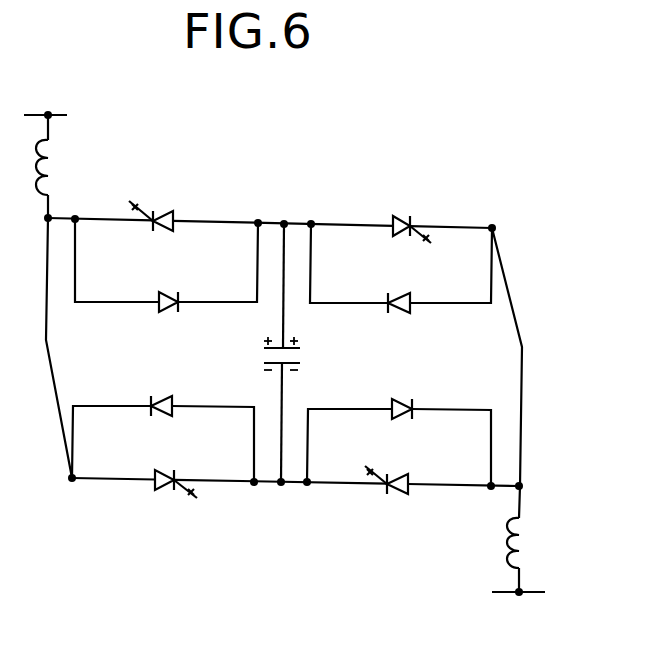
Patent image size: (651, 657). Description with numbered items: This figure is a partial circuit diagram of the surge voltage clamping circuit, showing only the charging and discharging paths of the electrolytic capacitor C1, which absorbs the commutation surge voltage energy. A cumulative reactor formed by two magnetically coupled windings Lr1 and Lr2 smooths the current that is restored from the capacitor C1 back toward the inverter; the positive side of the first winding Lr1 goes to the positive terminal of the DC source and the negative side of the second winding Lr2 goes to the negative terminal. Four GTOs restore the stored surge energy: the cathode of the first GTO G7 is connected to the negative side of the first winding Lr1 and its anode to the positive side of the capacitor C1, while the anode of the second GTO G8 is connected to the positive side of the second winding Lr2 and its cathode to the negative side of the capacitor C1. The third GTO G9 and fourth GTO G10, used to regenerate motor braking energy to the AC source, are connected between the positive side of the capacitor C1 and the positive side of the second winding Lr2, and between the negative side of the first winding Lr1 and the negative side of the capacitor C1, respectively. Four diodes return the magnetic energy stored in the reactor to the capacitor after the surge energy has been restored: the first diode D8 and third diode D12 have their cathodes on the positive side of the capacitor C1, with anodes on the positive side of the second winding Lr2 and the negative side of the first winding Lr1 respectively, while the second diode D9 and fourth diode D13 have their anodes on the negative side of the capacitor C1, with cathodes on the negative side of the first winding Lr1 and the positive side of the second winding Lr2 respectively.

The first winding Lr1 is at (53, 160).
The second winding Lr2 is at (522, 540).
The first GTO G7 is at (165, 212).
The second GTO G8 is at (403, 475).
The third GTO G9 is at (403, 217).
The fourth GTO G10 is at (168, 473).
The first diode D8 is at (405, 294).
The second diode D9 is at (166, 397).
The third diode D12 is at (172, 292).
The fourth diode D13 is at (406, 400).
The electrolytic capacitor C1 is at (297, 353).